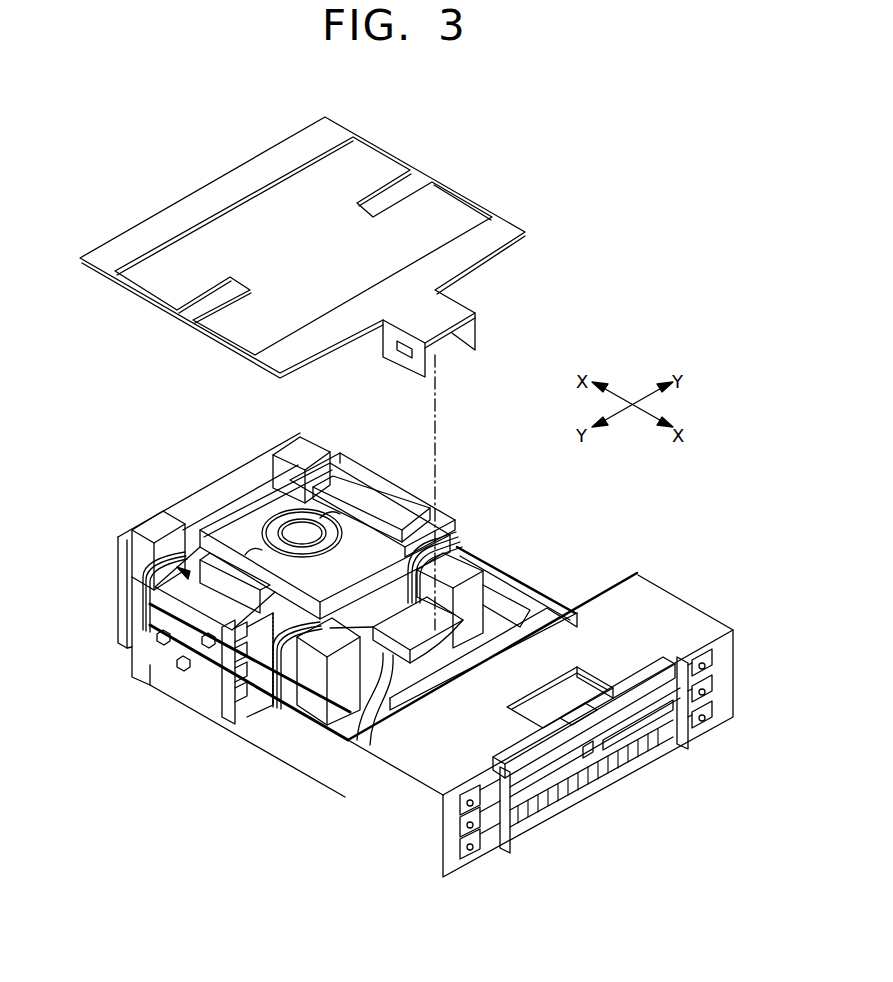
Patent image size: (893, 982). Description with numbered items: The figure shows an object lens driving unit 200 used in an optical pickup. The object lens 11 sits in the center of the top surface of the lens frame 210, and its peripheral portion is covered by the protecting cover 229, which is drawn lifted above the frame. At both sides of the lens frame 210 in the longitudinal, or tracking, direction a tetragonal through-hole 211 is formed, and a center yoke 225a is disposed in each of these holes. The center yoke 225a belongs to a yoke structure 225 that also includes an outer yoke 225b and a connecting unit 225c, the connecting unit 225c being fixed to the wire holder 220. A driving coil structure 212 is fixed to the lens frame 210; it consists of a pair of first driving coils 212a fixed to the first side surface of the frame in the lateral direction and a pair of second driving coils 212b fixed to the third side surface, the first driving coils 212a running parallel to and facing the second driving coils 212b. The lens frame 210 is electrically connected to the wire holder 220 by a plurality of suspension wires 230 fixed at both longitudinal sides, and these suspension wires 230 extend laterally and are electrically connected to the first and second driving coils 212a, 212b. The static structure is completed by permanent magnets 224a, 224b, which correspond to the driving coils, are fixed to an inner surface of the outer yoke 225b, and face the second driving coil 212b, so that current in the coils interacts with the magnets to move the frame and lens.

The camera module assembly 200 is at (652, 256).
The protecting cover 229 is at (223, 180).
The lens frame 210 is at (223, 525).
The object lens 11 is at (293, 530).
The permanent magnet 224a is at (153, 535).
The permanent magnet 224b is at (453, 563).
The driving coil structure 212 is at (175, 661).
The first driving coil 212a is at (143, 620).
The second driving coil 212b is at (243, 717).
The through-hole 211 is at (347, 475).
The yoke structure 225 is at (360, 642).
The center yoke 225a is at (358, 505).
The outer yoke 225b is at (438, 677).
The connecting unit 225c is at (402, 617).
The suspension wires 230 is at (503, 613).
The wire holder 220 is at (690, 620).